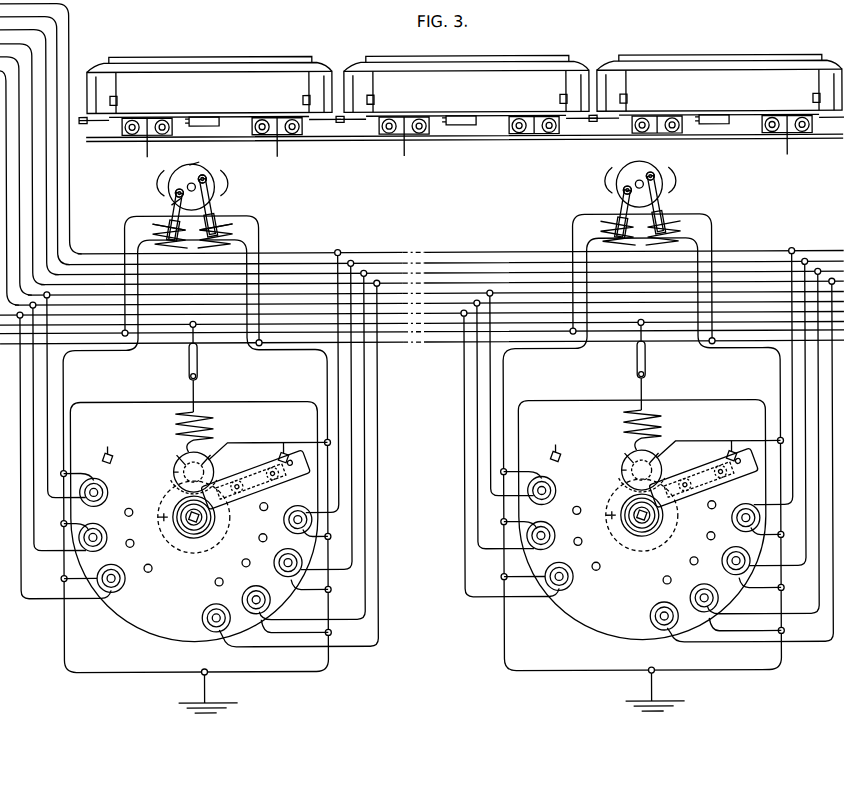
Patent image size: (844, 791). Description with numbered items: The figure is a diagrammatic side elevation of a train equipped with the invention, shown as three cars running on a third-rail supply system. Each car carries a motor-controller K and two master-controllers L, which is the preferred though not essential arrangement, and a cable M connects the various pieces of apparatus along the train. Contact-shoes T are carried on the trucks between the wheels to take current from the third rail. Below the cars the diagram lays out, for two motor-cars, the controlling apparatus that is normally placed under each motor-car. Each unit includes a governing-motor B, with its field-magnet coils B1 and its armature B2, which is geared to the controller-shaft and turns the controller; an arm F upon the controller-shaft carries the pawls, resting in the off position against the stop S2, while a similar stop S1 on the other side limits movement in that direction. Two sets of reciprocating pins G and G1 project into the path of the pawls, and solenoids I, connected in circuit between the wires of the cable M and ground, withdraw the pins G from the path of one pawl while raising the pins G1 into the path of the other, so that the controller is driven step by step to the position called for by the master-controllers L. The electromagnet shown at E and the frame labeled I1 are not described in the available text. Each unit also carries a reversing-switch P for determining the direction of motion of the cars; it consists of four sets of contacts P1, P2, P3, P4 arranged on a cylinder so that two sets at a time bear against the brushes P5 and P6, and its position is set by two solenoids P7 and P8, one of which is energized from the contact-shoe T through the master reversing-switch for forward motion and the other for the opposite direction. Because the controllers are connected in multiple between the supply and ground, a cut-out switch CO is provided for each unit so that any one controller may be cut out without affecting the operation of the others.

The master-controller L is at (118, 100).
The cable M is at (370, 254).
The motor-controller K is at (220, 123).
The contact-shoe T is at (465, 153).
The reversing-switch P is at (212, 168).
The set of contacts P1 is at (222, 199).
The set of contacts P2 is at (197, 165).
The set of contacts P3 is at (160, 189).
The set of contacts P4 is at (177, 200).
The brush P5 is at (613, 182).
The brush P6 is at (668, 184).
The solenoid P7 is at (150, 232).
The solenoid P8 is at (262, 230).
The cut-out switch CO is at (188, 362).
The governing-motor B is at (403, 463).
The field-magnet coils B1 is at (215, 424).
The armature B2 is at (172, 474).
The electromagnet E is at (192, 540).
The arm F is at (254, 474).
The reciprocating pins G is at (283, 522).
The reciprocating pins G1 is at (420, 544).
The solenoid I is at (418, 521).
The controller frame I1 is at (132, 672).
The stop S1 is at (329, 444).
The stop S2 is at (515, 441).